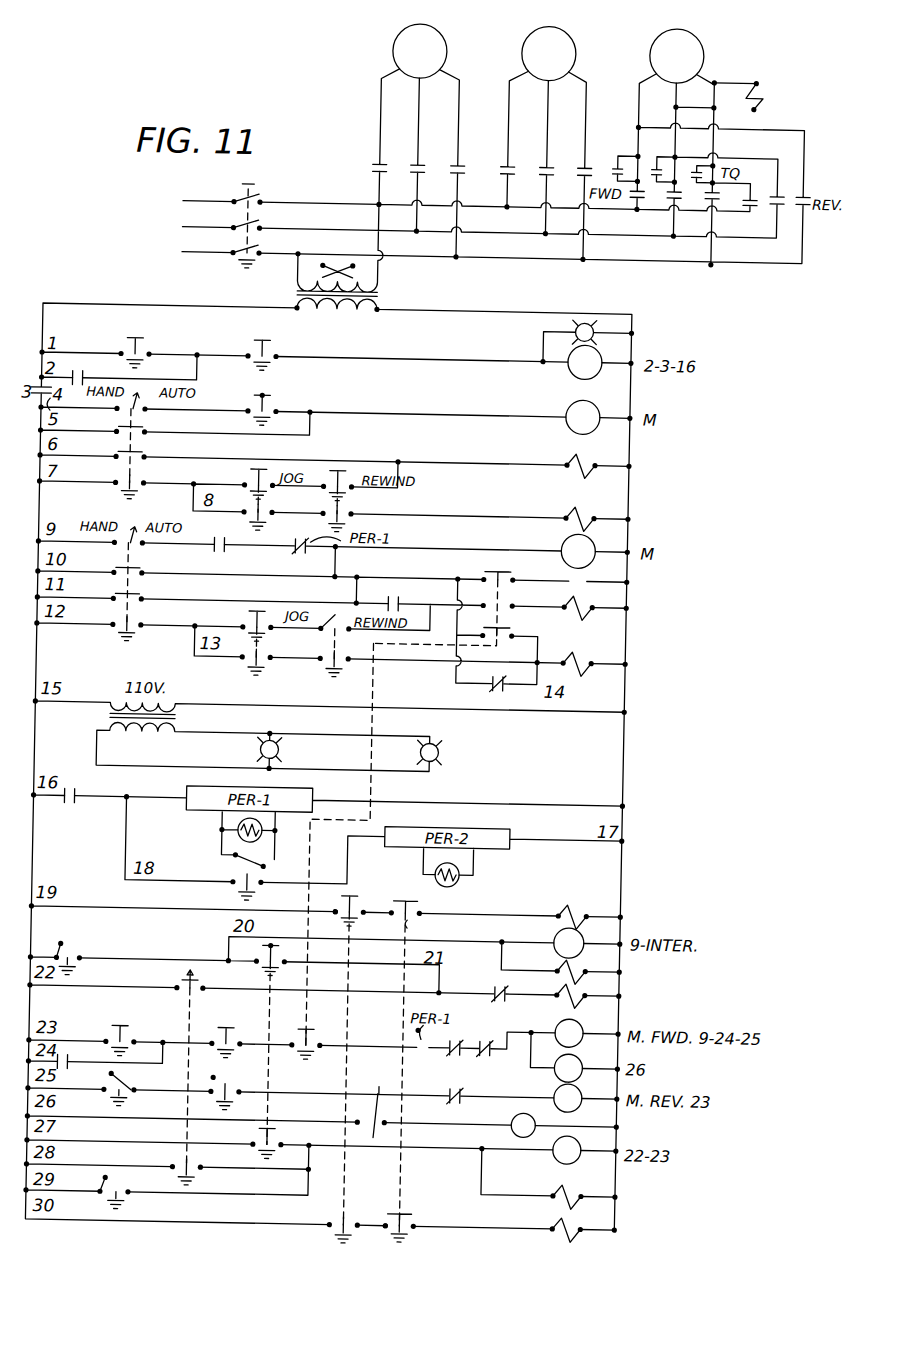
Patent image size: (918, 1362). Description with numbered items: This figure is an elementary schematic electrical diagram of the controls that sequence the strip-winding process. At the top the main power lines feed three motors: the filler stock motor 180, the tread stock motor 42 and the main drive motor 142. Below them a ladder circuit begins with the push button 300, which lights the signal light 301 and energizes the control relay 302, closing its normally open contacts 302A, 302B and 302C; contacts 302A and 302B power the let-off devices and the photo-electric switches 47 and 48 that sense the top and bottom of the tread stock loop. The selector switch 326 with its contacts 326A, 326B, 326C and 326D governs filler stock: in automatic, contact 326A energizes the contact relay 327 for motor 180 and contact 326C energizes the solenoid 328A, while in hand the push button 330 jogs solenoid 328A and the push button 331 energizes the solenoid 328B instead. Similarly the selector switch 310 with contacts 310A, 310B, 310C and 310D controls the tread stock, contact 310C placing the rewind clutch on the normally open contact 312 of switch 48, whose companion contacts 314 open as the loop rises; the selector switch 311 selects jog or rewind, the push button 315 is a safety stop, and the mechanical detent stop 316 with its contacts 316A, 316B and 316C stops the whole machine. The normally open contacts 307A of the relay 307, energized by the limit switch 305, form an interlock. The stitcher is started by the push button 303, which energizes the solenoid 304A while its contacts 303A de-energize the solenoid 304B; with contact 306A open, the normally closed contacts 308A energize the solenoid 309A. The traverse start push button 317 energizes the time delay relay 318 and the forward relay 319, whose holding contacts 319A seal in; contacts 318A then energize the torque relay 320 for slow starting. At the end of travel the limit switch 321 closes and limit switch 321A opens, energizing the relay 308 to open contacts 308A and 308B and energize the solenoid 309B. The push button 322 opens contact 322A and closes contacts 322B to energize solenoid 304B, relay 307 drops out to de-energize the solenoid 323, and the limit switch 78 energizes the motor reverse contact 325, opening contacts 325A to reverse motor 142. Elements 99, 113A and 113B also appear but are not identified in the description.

The filler stock motor 180 is at (442, 46).
The tread stock motor 42 is at (571, 47).
The main drive motor 142 is at (699, 50).
The push button 300 is at (138, 337).
The normally open contact 302A is at (90, 372).
The signal light 301 is at (591, 312).
The control relay 302 is at (569, 368).
The normally open contact 302B is at (56, 407).
The selector switch 326 is at (141, 395).
The contact 326A is at (150, 408).
The contact 326B is at (142, 433).
The contact 326C is at (142, 460).
The contact 326D is at (122, 484).
The push button switch 99 is at (267, 394).
The contact relay 327 is at (568, 407).
The push button 330 is at (262, 464).
The push button 331 is at (335, 465).
The solenoid 328A is at (570, 455).
The solenoid 328B is at (570, 508).
The selector switch 310 is at (132, 526).
The contact 310A is at (147, 546).
The contact 310B is at (147, 574).
The contact 310C is at (147, 600).
The contact 310D is at (120, 628).
The normally open contacts 307A is at (248, 554).
The mechanical detent stop 316 is at (492, 563).
The contact 316A is at (518, 599).
The contact 316B is at (518, 627).
The contact 316C is at (519, 648).
The normally open contact 312 is at (406, 598).
The push button 315 is at (263, 607).
The selector switch 311 is at (324, 638).
The contacts 314 is at (497, 677).
The limit switch contact 113A is at (579, 609).
The limit switch contact 113B is at (580, 659).
The photo-electric switch 47 is at (289, 745).
The photo-electric switch 48 is at (449, 745).
The normally open contact 302C is at (89, 781).
The limit switch 305 is at (75, 951).
The limit switch 321A is at (283, 943).
The push button 303 is at (362, 889).
The push button 322 is at (430, 895).
The contact 322A is at (424, 920).
The solenoid 304A is at (578, 901).
The relay 307 is at (566, 933).
The normally closed contacts 308A is at (503, 980).
The solenoid 323 is at (569, 962).
The solenoid 309A is at (570, 986).
The traverse start push button 317 is at (133, 1024).
The forward relay 319 is at (581, 1020).
The time delay relay 318 is at (585, 1044).
The contacts 325A is at (500, 1033).
The normally closed contacts 308B is at (469, 1047).
The limit switch 78 is at (132, 1074).
The holding contacts 319A is at (84, 1066).
The motor reverse contact 325 is at (568, 1088).
The contacts 318A is at (371, 1104).
The torque relay 320 is at (527, 1115).
The limit switch 321 is at (285, 1140).
The contact 306A is at (187, 1160).
The relay 308 is at (570, 1148).
The solenoid 309B is at (569, 1185).
The contacts 303A is at (351, 1215).
The contacts 322B is at (418, 1212).
The solenoid 304B is at (569, 1218).